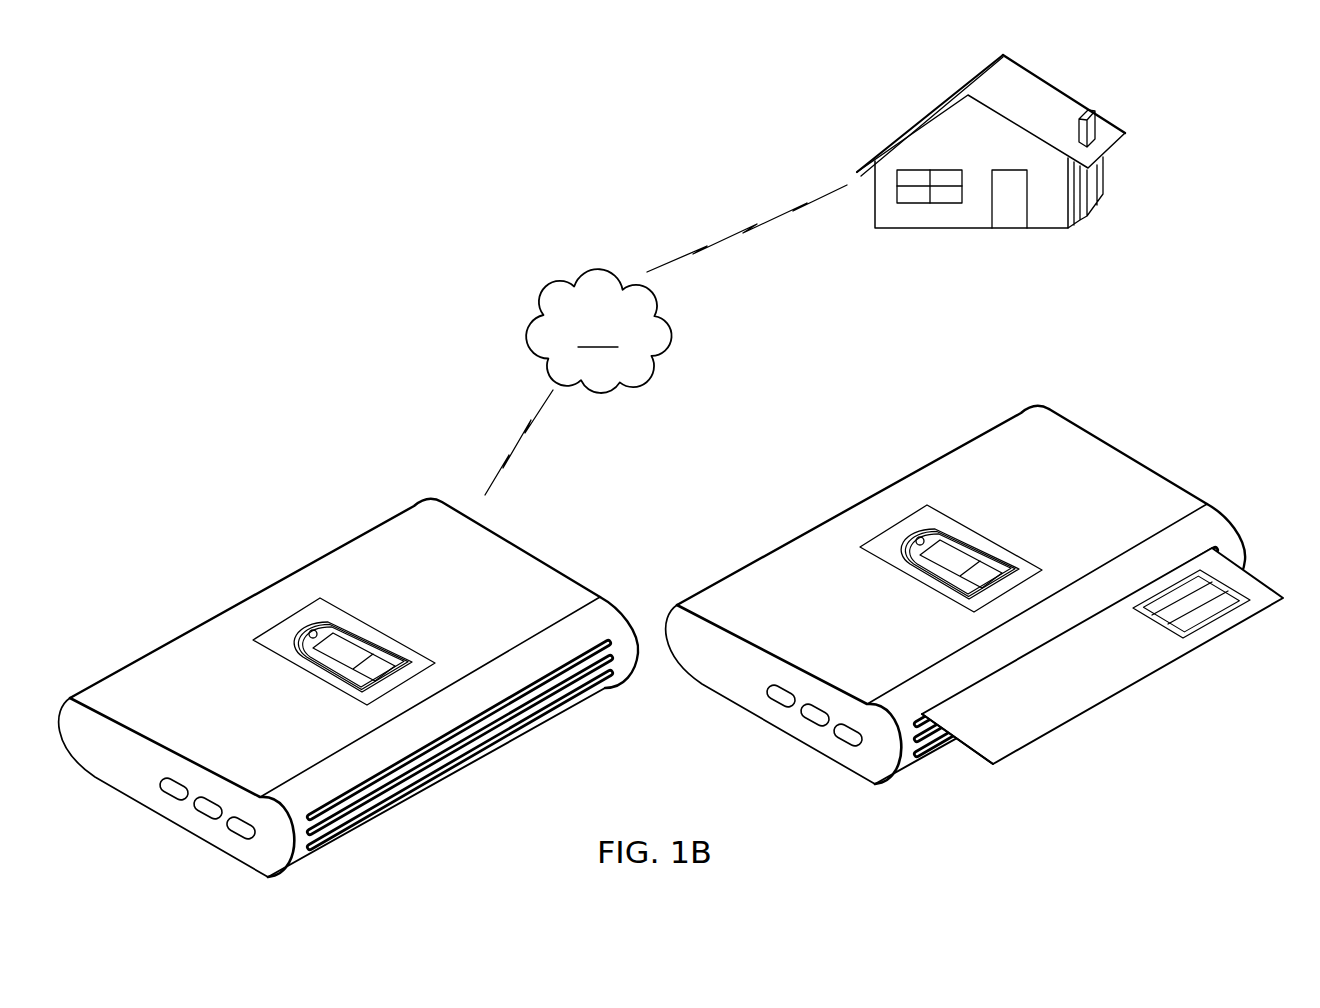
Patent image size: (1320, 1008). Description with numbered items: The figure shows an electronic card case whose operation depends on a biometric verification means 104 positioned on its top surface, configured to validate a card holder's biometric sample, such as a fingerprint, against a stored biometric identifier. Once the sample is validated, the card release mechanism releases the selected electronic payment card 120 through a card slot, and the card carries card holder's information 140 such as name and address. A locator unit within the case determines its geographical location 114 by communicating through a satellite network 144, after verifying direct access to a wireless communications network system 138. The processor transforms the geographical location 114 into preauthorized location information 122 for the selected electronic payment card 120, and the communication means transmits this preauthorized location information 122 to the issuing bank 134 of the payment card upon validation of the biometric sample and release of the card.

The biometric verification means 104 is at (323, 620).
The geographical location 114 is at (349, 688).
The electronic payment card 120 is at (1102, 681).
The preauthorized location information 122 is at (956, 576).
The issuing bank 134 is at (912, 124).
The wireless communications network system 138 is at (987, 753).
The card holder's information 140 is at (1132, 485).
The network 144 is at (588, 270).